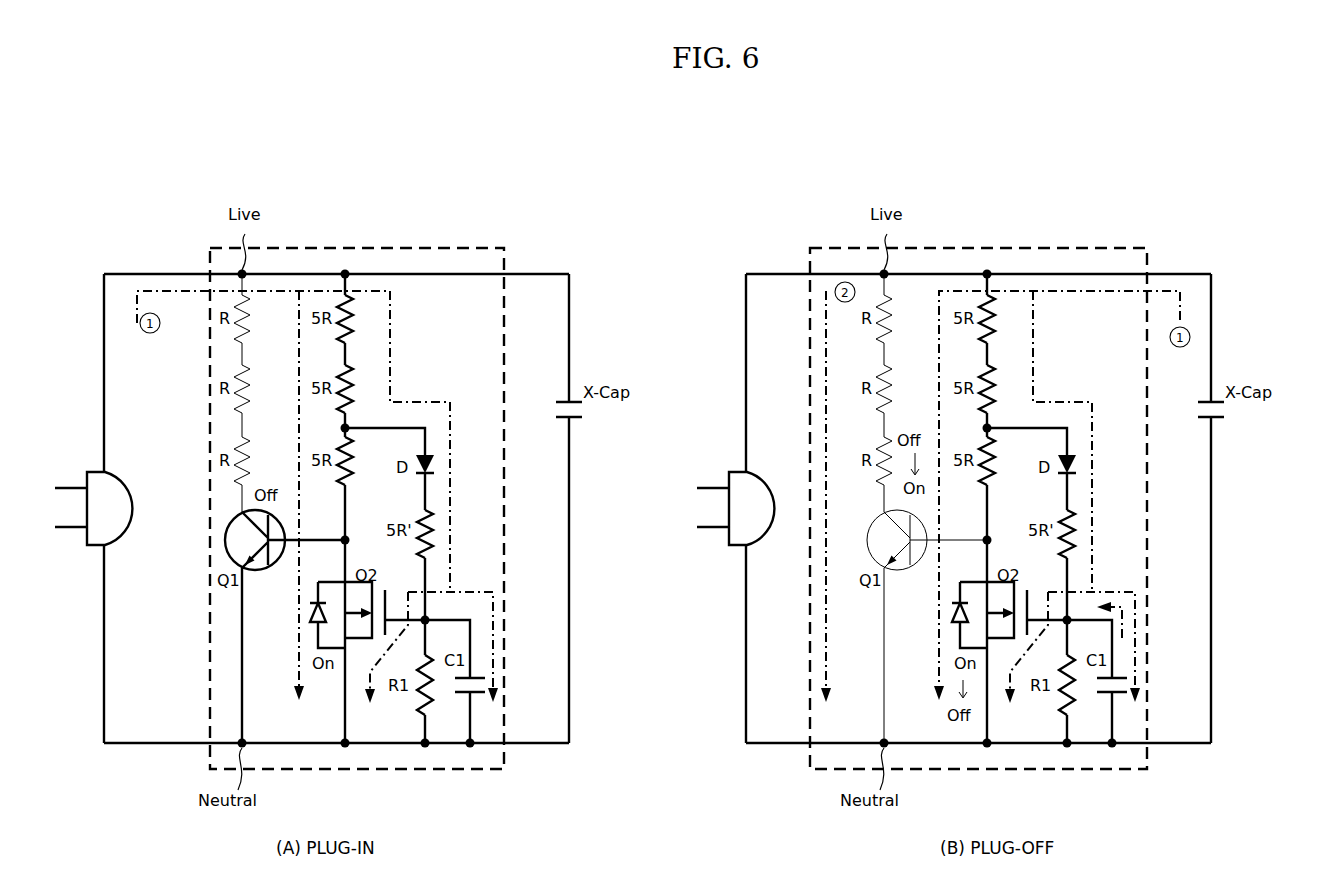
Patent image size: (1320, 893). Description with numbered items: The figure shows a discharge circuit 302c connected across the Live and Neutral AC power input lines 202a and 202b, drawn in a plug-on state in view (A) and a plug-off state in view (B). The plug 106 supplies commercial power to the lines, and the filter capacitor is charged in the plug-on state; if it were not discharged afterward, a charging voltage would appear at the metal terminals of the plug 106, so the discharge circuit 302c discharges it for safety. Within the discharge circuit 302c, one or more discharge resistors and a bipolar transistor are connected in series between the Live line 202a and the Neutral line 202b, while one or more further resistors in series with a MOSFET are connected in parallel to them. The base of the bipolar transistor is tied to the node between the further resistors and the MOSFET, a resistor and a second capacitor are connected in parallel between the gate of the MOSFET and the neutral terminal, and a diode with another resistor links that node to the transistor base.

The plug 106 is at (78, 481).
The AC power input line 202a is at (175, 271).
The AC power input line 202b is at (140, 747).
The discharge circuit 302c is at (403, 247).